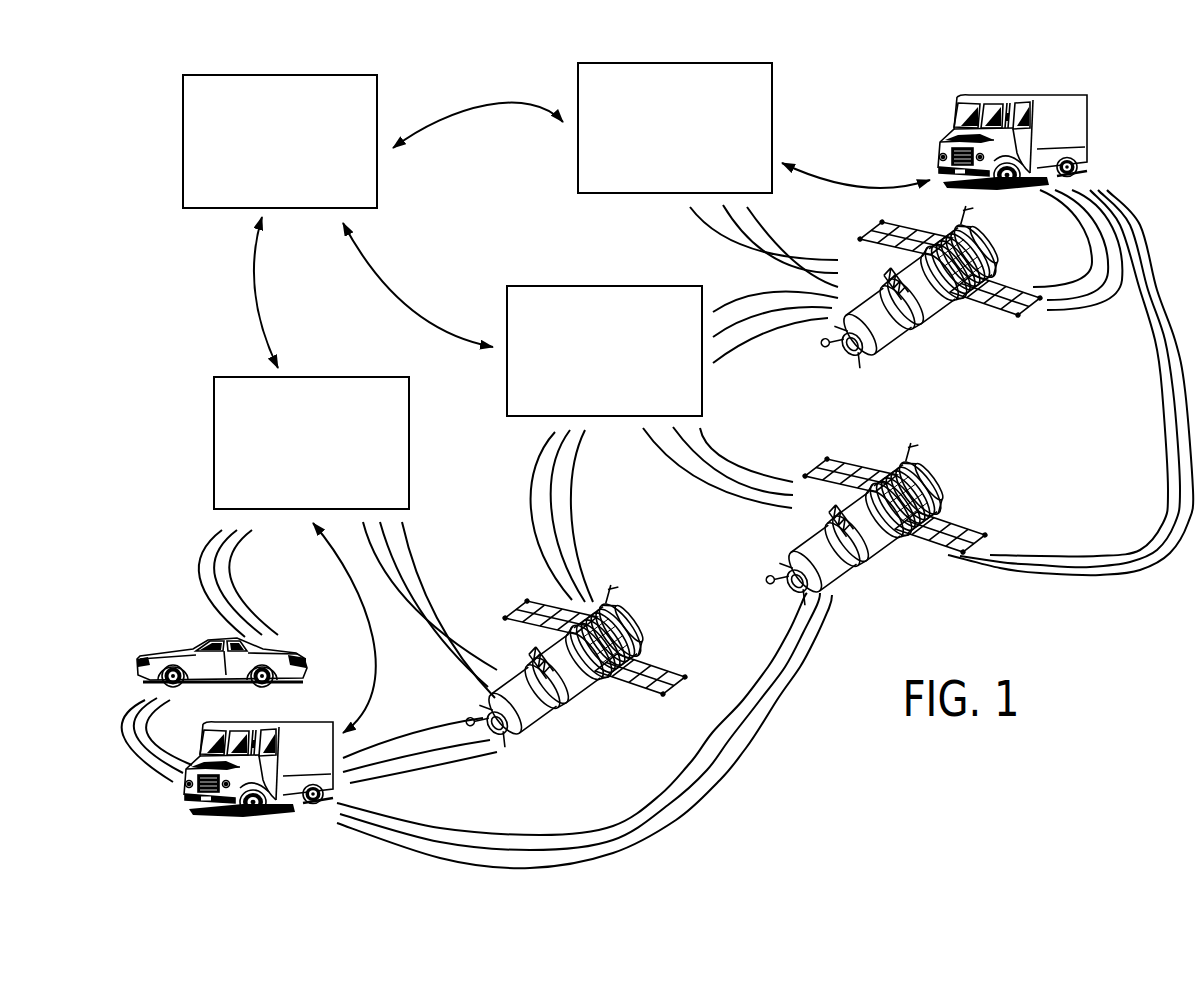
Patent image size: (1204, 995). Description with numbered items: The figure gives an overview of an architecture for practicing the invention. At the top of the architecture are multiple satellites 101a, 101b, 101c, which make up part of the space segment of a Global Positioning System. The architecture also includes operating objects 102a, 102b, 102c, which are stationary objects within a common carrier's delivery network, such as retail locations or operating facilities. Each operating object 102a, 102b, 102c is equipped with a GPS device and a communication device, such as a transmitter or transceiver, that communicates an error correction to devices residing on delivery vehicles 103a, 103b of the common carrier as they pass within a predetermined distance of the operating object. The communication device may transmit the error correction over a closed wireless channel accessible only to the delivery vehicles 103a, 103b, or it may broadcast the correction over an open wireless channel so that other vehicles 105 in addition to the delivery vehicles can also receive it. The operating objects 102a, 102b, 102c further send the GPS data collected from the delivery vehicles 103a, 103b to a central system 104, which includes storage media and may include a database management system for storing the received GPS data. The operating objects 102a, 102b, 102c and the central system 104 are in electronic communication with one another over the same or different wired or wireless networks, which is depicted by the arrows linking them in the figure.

The central system 104 is at (208, 208).
The operating object 102a is at (773, 127).
The operating object 102b is at (542, 285).
The operating object 102c is at (410, 390).
The satellite 101a is at (1020, 323).
The satellite 101b is at (960, 508).
The satellite 101c is at (597, 692).
The delivery vehicle 103a is at (1090, 120).
The delivery vehicle 103b is at (275, 822).
The other vehicle 105 is at (183, 640).